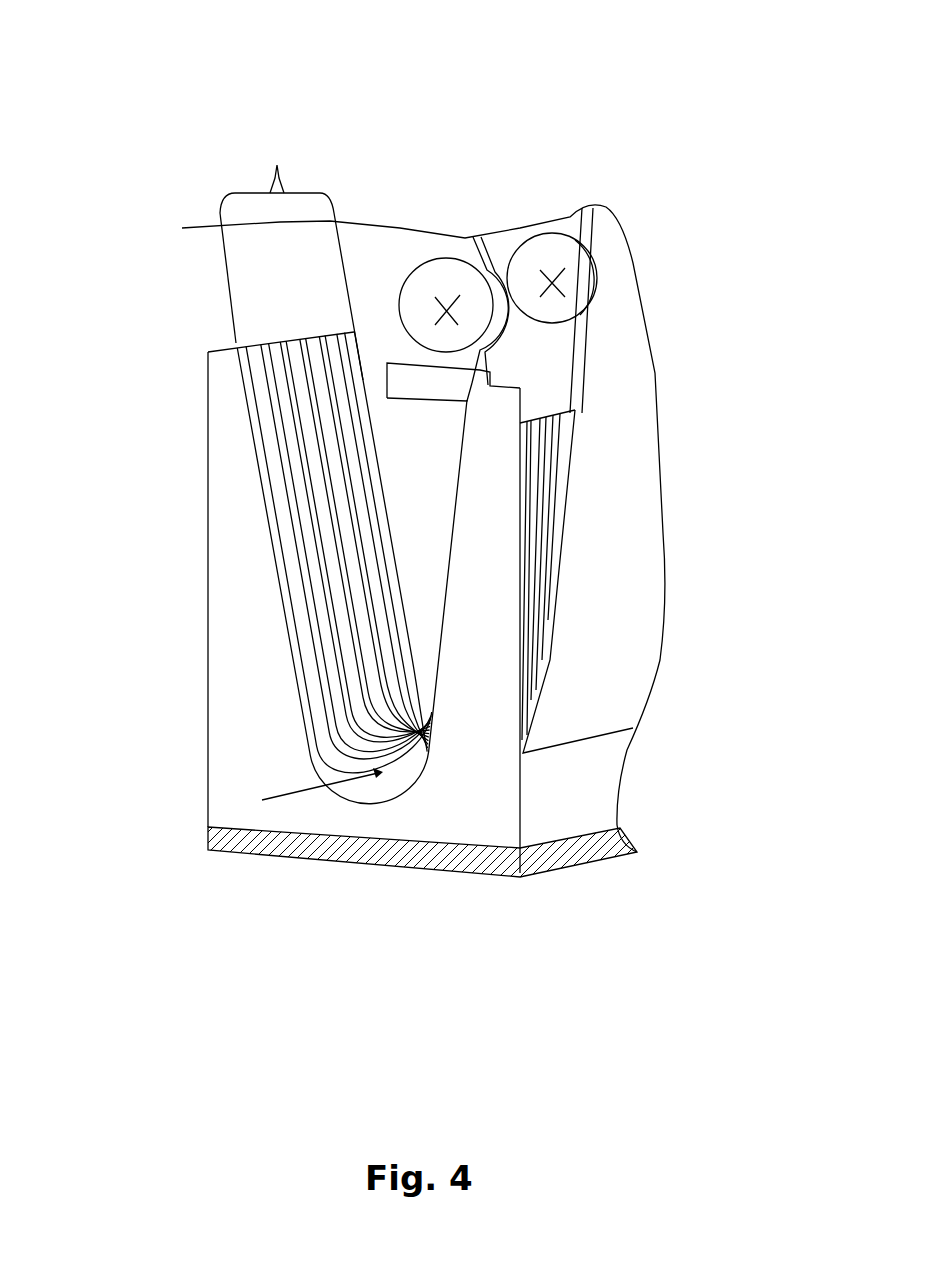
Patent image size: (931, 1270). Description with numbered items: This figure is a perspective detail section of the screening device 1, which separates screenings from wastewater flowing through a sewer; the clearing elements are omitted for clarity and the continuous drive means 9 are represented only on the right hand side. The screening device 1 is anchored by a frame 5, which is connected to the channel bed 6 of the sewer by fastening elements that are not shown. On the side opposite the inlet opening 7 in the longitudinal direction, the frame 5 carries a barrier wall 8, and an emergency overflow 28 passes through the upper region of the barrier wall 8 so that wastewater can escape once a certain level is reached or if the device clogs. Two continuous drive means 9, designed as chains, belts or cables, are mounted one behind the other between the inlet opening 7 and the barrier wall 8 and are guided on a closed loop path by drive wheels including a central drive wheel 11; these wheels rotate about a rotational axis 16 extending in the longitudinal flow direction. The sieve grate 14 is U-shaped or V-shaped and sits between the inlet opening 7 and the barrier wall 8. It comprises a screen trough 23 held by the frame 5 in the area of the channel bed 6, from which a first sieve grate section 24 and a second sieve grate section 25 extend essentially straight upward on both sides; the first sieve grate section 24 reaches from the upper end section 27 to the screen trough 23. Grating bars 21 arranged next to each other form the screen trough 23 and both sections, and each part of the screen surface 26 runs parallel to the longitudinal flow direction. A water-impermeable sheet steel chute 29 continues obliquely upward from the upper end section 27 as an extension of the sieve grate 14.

The screening device 1 is at (144, 118).
The frame 5 is at (318, 827).
The channel bed 6 is at (485, 855).
The inlet opening 7 is at (353, 800).
The barrier wall 8 is at (377, 343).
The continuous drive means 9 is at (480, 258).
The central drive wheel 11 is at (575, 293).
The sieve grate 14 is at (296, 719).
The rotational axis 16 is at (446, 305).
The grating bars 21 is at (547, 468).
The screen trough 23 is at (407, 770).
The first sieve grate section 24 is at (292, 520).
The second sieve grate section 25 is at (545, 617).
The screen surface 26 is at (275, 162).
The upper end section 27 is at (250, 350).
The emergency overflow 28 is at (387, 368).
The sheet steel chute 29 is at (275, 282).